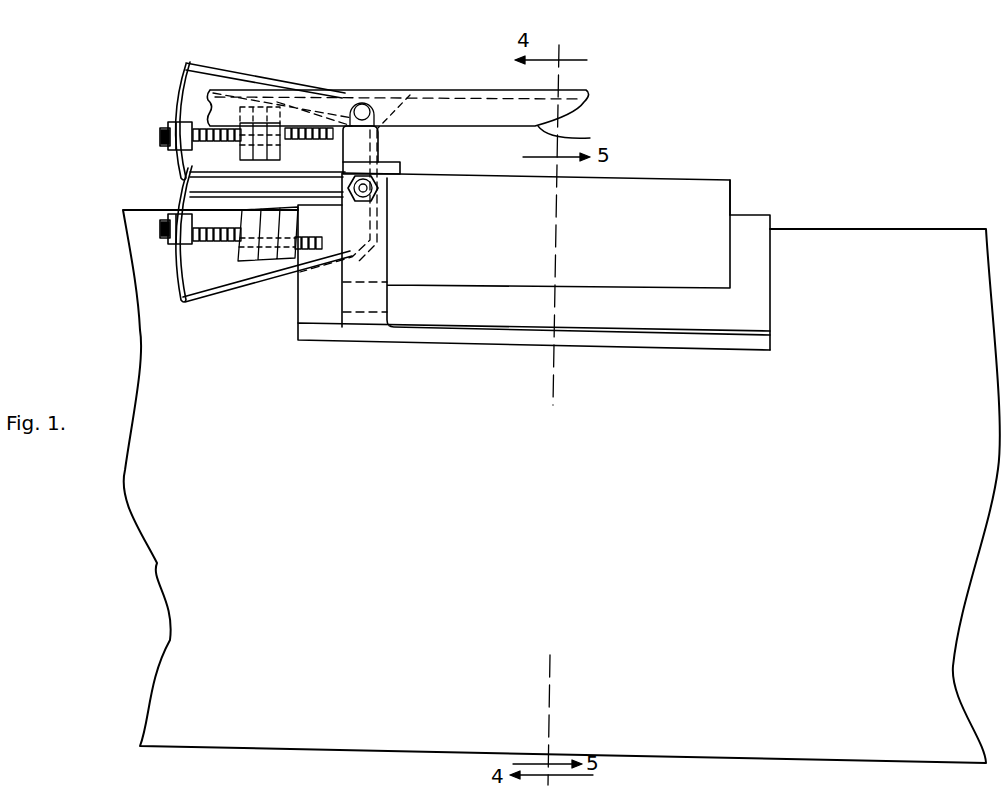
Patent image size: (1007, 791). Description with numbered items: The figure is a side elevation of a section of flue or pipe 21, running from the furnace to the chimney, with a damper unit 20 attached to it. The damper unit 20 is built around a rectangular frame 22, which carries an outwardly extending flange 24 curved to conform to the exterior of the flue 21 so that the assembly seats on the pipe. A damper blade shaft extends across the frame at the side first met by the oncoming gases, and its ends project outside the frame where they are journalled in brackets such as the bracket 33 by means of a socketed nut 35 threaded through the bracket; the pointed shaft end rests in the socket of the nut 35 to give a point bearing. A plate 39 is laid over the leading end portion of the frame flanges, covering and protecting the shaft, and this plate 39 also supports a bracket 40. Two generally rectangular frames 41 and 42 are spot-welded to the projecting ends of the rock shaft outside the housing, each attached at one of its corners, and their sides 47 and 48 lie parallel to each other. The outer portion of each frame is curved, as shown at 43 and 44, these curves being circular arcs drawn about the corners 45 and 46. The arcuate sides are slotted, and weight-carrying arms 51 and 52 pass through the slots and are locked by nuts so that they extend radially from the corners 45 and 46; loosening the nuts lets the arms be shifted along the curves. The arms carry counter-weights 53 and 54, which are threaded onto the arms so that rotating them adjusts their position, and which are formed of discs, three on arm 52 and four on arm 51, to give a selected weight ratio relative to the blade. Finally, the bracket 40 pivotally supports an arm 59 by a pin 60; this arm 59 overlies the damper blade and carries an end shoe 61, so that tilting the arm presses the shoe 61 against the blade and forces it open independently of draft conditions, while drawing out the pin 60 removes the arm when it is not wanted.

The damper unit 20 is at (738, 195).
The flue or pipe 21 is at (561, 486).
The frame 22 is at (534, 261).
The outwardly extending flange 24 is at (758, 228).
The bracket 33 is at (378, 236).
The socketed nut 35 is at (383, 190).
The plate 39 is at (400, 168).
The bracket 40 is at (360, 144).
The frame 41 is at (212, 300).
The frame 42 is at (225, 78).
The curved portion 43 is at (177, 273).
The curved portion 44 is at (182, 97).
The corner 45 is at (388, 250).
The corner 46 is at (410, 95).
The frame side 47 is at (313, 165).
The frame side 48 is at (230, 193).
The weight-carrying arm 51 is at (222, 240).
The weight-carrying arm 52 is at (200, 123).
The counter-weight 53 is at (268, 262).
The counter-weight 54 is at (260, 107).
The arm 59 is at (463, 110).
The pin 60 is at (362, 103).
The end shoe 61 is at (576, 138).